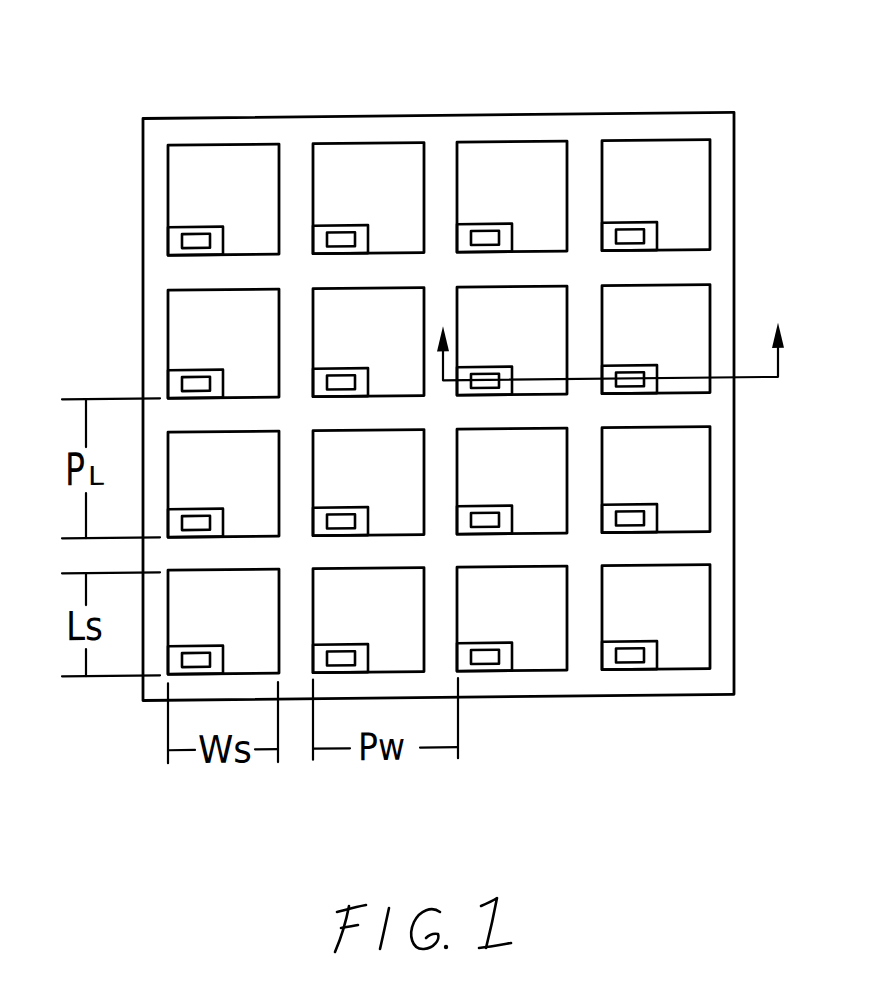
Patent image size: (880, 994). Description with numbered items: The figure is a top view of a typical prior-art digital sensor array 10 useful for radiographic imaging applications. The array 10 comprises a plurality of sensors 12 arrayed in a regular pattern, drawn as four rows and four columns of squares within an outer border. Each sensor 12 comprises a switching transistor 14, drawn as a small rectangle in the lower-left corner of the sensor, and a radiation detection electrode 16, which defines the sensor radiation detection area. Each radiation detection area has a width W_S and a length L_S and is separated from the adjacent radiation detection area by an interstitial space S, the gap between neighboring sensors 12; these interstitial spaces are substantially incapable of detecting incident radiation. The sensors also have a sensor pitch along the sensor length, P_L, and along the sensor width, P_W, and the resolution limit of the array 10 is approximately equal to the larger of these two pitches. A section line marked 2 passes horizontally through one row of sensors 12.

The digital sensor array 10 is at (220, 120).
The sensor 12 is at (695, 146).
The switching transistor 14 is at (340, 242).
The radiation detection electrode 16 is at (385, 189).
The section line 2- 2 is at (609, 326).
The interstitial space S is at (578, 606).